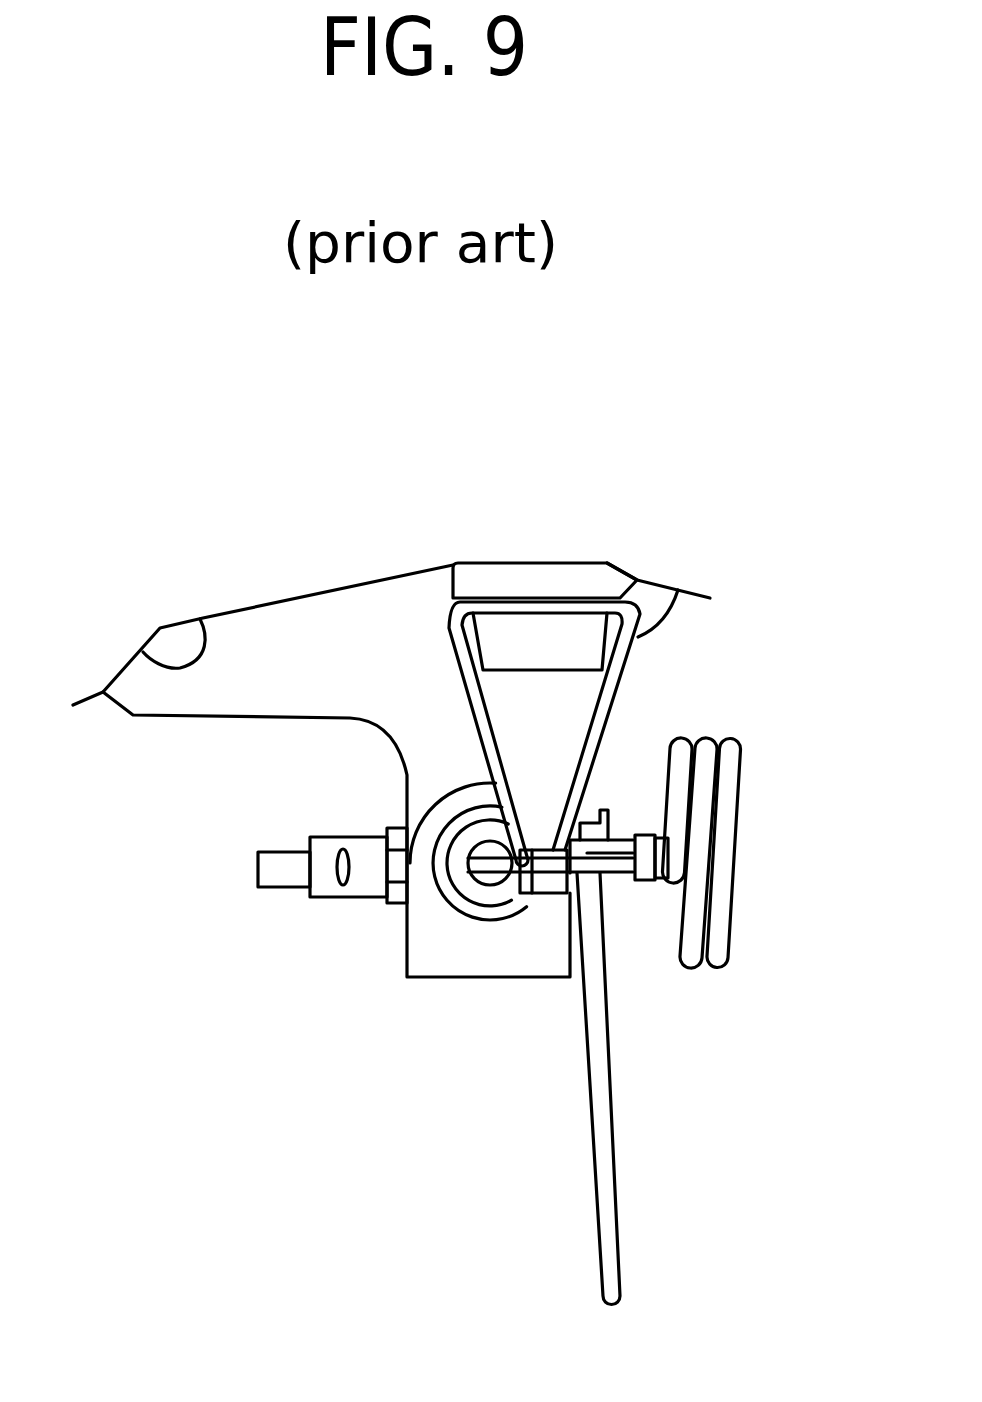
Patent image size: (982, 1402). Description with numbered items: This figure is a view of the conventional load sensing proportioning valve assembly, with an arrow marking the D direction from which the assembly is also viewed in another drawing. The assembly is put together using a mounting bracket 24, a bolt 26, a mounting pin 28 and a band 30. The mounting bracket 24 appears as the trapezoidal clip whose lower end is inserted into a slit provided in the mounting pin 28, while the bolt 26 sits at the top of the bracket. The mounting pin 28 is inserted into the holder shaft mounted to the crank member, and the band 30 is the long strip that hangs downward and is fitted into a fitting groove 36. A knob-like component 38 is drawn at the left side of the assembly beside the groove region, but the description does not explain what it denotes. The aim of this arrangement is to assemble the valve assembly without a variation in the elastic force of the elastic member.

The mounting bracket 24 is at (582, 705).
The bolt 26 is at (585, 637).
The mounting pin 28 is at (577, 862).
The band 30 is at (603, 1208).
The fitting groove 36 is at (397, 887).
The knob 38 is at (340, 853).
The D direction D is at (554, 490).